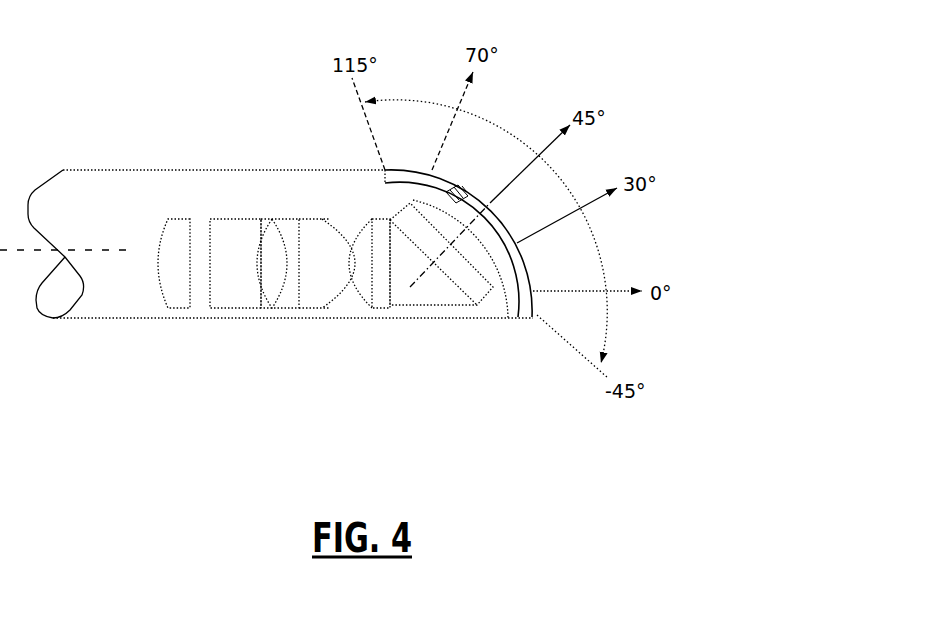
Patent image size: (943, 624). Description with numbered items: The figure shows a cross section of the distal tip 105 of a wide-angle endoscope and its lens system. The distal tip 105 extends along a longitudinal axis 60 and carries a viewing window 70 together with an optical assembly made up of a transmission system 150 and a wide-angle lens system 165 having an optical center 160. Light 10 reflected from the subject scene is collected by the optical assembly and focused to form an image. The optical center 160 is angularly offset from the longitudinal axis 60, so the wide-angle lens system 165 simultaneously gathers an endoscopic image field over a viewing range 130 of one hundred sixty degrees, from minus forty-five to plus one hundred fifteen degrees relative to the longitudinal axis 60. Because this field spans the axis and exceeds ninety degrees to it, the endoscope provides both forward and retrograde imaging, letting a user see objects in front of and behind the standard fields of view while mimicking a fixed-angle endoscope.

The distal tip 105 is at (244, 70).
The light 10 is at (227, 318).
The longitudinal axis 60 is at (100, 248).
The transmission system 150 is at (278, 202).
The optical center 160 is at (422, 277).
The wide-angle lens system 165 is at (495, 286).
The viewing window 70 is at (475, 198).
The viewing range 130 is at (596, 240).